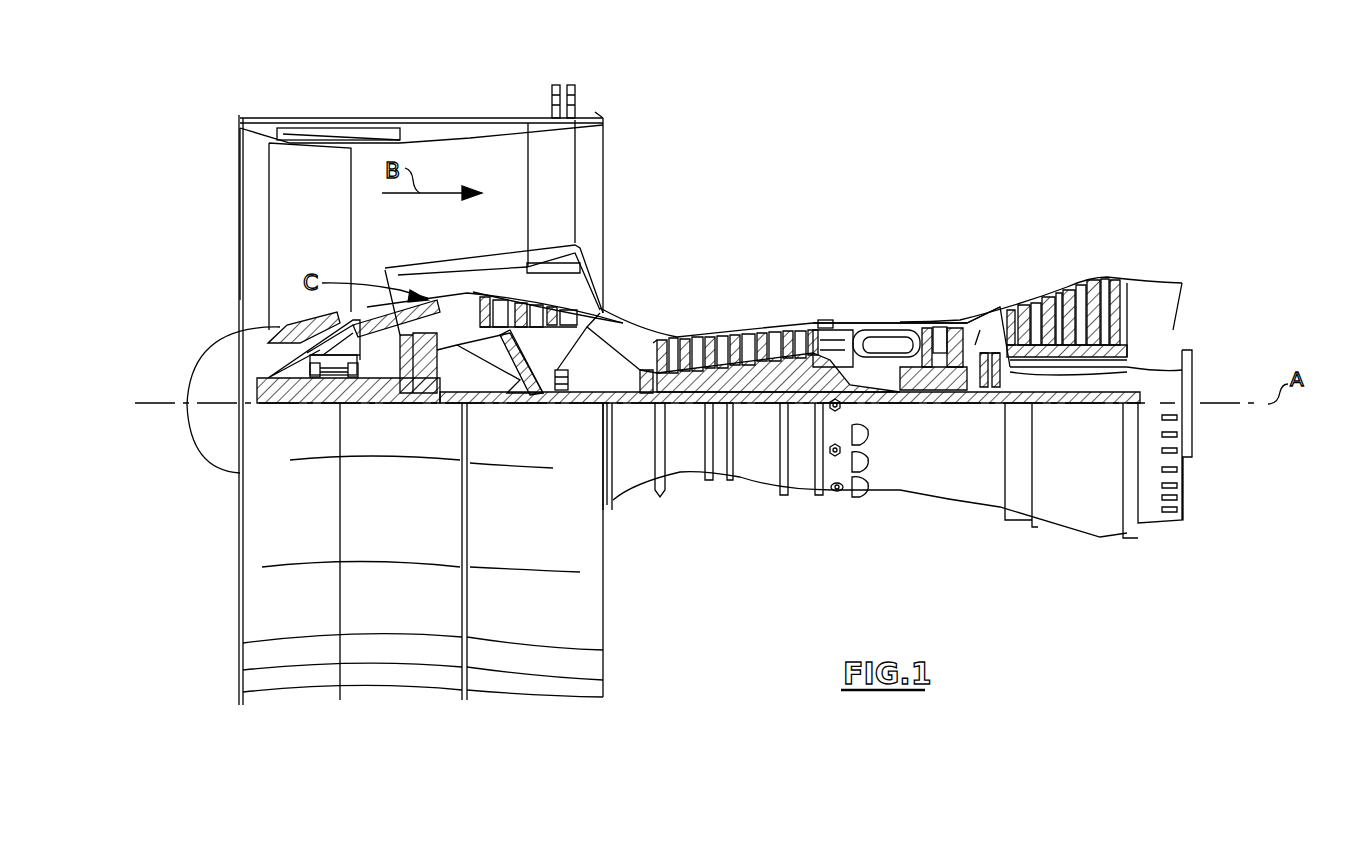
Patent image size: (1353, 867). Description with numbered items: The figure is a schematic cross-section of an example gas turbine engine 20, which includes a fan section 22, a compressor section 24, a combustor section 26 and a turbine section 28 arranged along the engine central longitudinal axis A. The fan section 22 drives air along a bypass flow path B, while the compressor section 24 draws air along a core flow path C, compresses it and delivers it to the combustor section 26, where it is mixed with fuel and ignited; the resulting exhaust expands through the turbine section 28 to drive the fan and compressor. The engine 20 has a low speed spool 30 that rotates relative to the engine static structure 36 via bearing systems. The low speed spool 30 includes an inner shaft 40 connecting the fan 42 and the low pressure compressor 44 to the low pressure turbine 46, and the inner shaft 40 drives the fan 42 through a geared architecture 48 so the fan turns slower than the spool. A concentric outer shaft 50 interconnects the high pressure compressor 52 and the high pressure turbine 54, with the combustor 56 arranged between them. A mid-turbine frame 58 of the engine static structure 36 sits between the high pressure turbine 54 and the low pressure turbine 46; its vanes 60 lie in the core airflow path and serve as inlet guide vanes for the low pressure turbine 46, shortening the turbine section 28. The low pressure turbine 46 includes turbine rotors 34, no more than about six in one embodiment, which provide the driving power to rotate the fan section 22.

The gas turbine engine 20 is at (882, 171).
The fan section 22 is at (448, 92).
The compressor section 24 is at (460, 238).
The combustor section 26 is at (913, 238).
The turbine section 28 is at (1135, 238).
The low speed spool 30 is at (760, 405).
The turbine rotors 34 is at (1073, 363).
The engine static structure 36 is at (800, 488).
The inner shaft 40 is at (627, 407).
The fan 42 is at (310, 236).
The low pressure compressor section 44 is at (580, 260).
The low pressure turbine section 46 is at (1063, 285).
The geared architecture 48 is at (430, 387).
The outer shaft 50 is at (883, 390).
The high pressure compressor section 52 is at (740, 368).
The high pressure turbine section 54 is at (940, 325).
The combustor 56 is at (872, 340).
The mid-turbine frame 58 is at (983, 312).
The vanes 60 is at (1018, 395).